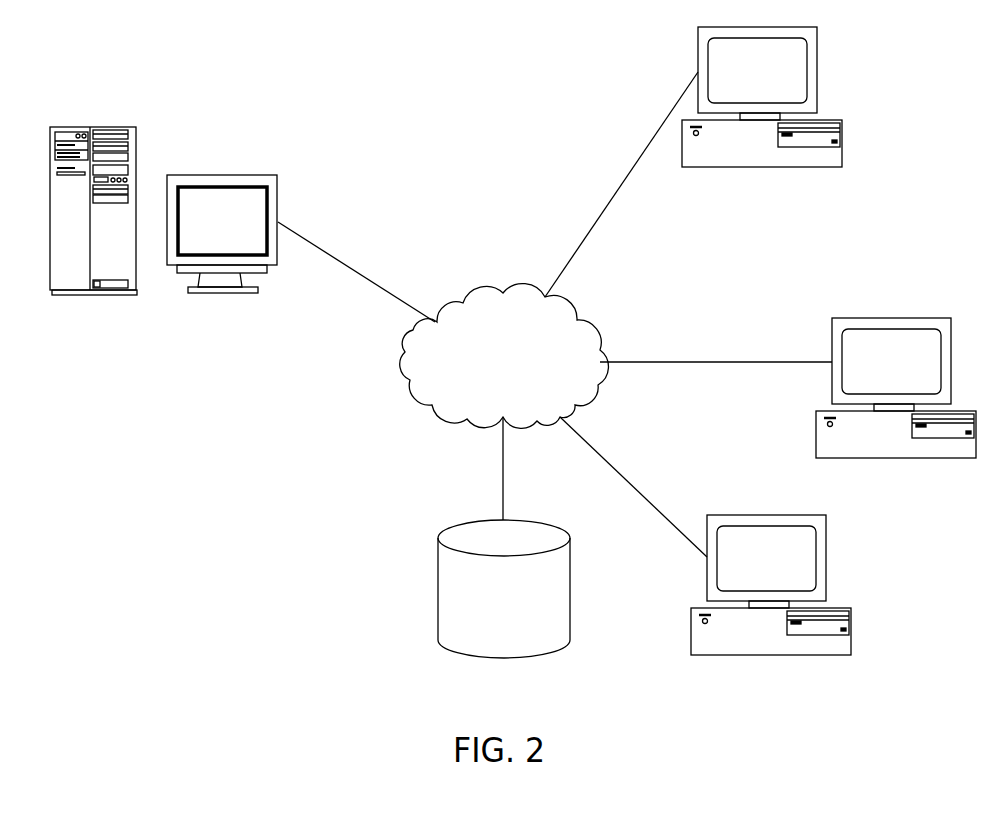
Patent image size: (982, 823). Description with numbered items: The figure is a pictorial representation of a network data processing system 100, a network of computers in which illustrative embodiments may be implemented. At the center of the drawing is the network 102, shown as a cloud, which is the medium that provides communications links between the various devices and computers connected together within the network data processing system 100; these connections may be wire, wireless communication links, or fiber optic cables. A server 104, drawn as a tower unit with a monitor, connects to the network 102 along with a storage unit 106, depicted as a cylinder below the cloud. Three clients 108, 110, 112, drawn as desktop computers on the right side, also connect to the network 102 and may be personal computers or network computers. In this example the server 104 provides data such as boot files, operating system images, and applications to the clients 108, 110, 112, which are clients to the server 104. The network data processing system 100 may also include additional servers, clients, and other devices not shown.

The network data processing system 100 is at (293, 443).
The network 102 is at (477, 368).
The server 104 is at (200, 233).
The storage unit 106 is at (447, 620).
The client 108 is at (733, 82).
The client 110 is at (871, 370).
The client 112 is at (746, 570).